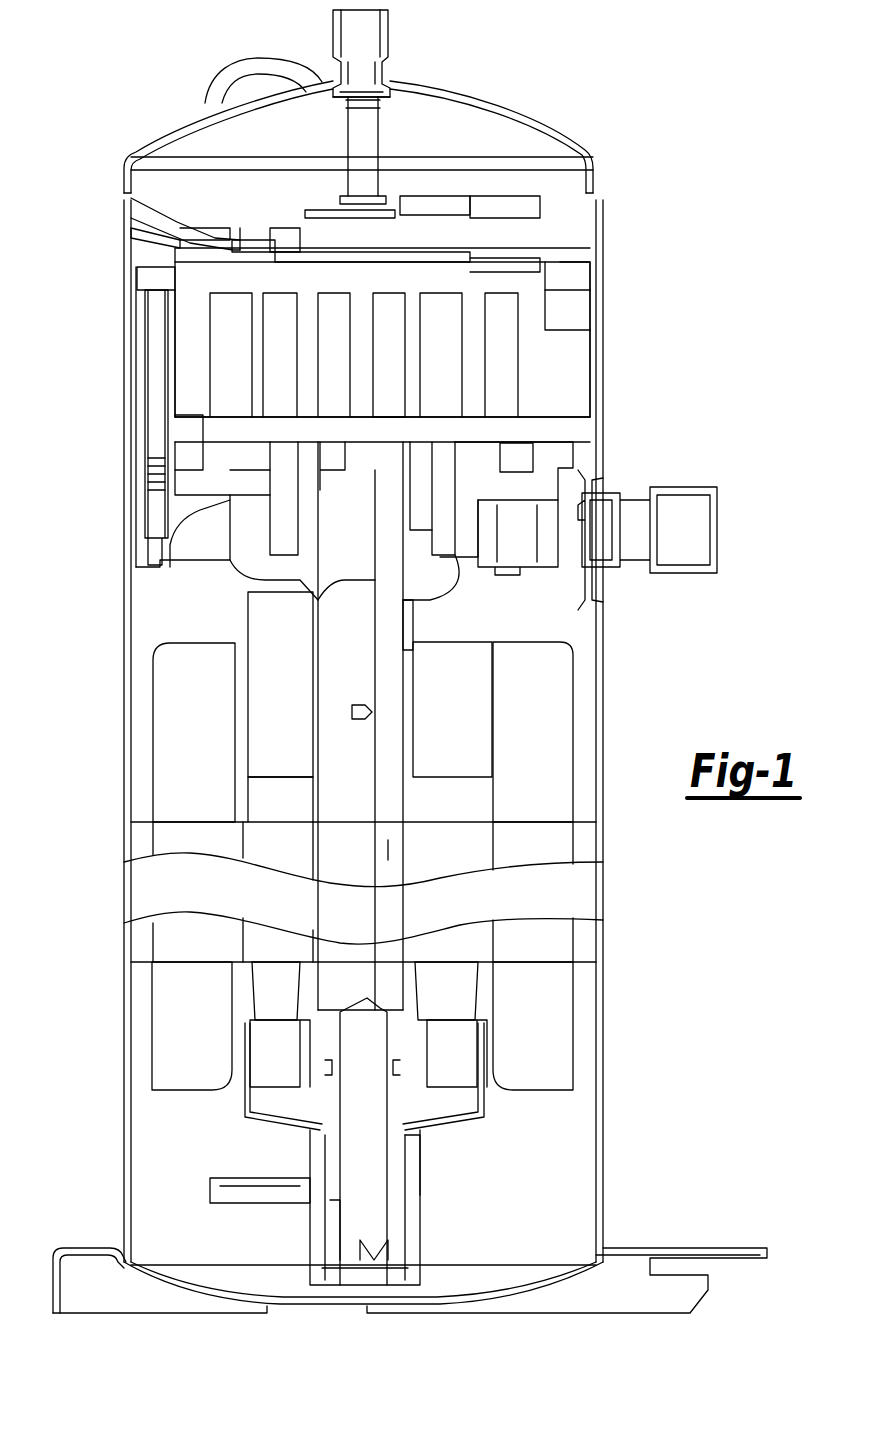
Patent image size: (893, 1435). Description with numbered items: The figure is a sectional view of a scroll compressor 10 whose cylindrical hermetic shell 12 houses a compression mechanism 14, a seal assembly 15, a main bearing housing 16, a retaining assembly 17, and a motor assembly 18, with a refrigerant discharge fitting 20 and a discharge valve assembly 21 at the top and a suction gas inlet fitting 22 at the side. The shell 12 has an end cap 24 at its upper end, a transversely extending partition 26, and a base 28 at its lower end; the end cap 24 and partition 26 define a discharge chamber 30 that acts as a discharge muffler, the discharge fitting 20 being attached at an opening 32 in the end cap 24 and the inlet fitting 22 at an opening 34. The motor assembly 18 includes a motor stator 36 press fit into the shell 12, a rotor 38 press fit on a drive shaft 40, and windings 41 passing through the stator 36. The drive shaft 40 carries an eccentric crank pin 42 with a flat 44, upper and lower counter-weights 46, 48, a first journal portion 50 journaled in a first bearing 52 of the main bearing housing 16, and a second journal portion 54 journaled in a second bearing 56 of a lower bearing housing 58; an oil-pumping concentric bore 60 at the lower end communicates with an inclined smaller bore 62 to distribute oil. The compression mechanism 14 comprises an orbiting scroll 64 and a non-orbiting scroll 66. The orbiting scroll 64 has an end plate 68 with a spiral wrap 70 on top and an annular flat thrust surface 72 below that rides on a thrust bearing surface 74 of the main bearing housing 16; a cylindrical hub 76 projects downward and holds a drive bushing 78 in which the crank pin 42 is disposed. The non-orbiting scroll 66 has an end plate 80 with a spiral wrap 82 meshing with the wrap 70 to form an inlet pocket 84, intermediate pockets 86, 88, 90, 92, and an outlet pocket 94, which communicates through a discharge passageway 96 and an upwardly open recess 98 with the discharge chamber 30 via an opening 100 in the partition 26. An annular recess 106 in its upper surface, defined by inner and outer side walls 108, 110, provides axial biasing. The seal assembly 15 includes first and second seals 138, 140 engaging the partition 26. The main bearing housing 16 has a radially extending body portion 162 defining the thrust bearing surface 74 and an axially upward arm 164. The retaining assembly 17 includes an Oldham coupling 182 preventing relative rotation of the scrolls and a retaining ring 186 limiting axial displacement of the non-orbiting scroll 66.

The compressor 10 is at (105, 128).
The cylindrical hermetic shell 12 is at (600, 668).
The compression mechanism 14 is at (572, 247).
The seal assembly 15 is at (228, 250).
The main bearing housing 16 is at (195, 560).
The retaining assembly 17 is at (132, 328).
The motor assembly 18 is at (150, 710).
The refrigerant discharge fitting 20 is at (333, 28).
The discharge valve assembly 21 is at (382, 184).
The suction gas inlet fitting 22 is at (690, 485).
The end cap 24 is at (514, 110).
The transversely extending partition 26 is at (215, 228).
The base 28 is at (650, 1248).
The discharge chamber 30 is at (260, 150).
The opening 32 is at (345, 78).
The opening 34 is at (600, 492).
The motor stator 36 is at (211, 908).
The rotor 38 is at (263, 805).
The drive shaft 40 is at (354, 774).
The windings 41 is at (160, 678).
The eccentric crank pin 42 is at (355, 527).
The flat 44 is at (332, 455).
The upper counter-weight 46 is at (255, 678).
The lower counter-weight 48 is at (465, 1065).
The first journal portion 50 is at (345, 625).
The first bearing 52 is at (415, 607).
The second journal portion 54 is at (325, 1155).
The second bearing 56 is at (400, 1195).
The lower bearing housing 58 is at (312, 1232).
The oil-pumping concentric bore 60 is at (376, 1093).
The inclined bore 62 is at (390, 845).
The orbiting scroll 64 is at (530, 427).
The non-orbiting scroll 66 is at (522, 245).
The end plate 68 is at (185, 430).
The spiral wrap 70 is at (525, 353).
The annular flat thrust surface 72 is at (508, 478).
The annular flat thrust bearing surface 74 is at (243, 435).
The cylindrical hub 76 is at (290, 498).
The drive bushing 78 is at (422, 460).
The end plate 80 is at (195, 272).
The spiral wrap 82 is at (515, 288).
The inlet pocket 84 is at (514, 368).
The intermediate pocket 86 is at (456, 348).
The intermediate pocket 88 is at (402, 366).
The intermediate pocket 90 is at (293, 344).
The intermediate pocket 92 is at (236, 328).
The outlet pocket 94 is at (347, 358).
The discharge passageway 96 is at (402, 329).
The upwardly open recess 98 is at (415, 245).
The opening 100 is at (362, 200).
The annular recess 106 is at (485, 268).
The inner side wall 108 is at (290, 247).
The outer side wall 110 is at (182, 237).
The first seal 138 is at (292, 250).
The second seal 140 is at (248, 240).
The radially extending body portion 162 is at (192, 492).
The arm 164 is at (140, 386).
The Oldham coupling 182 is at (565, 438).
The retaining ring 186 is at (585, 312).